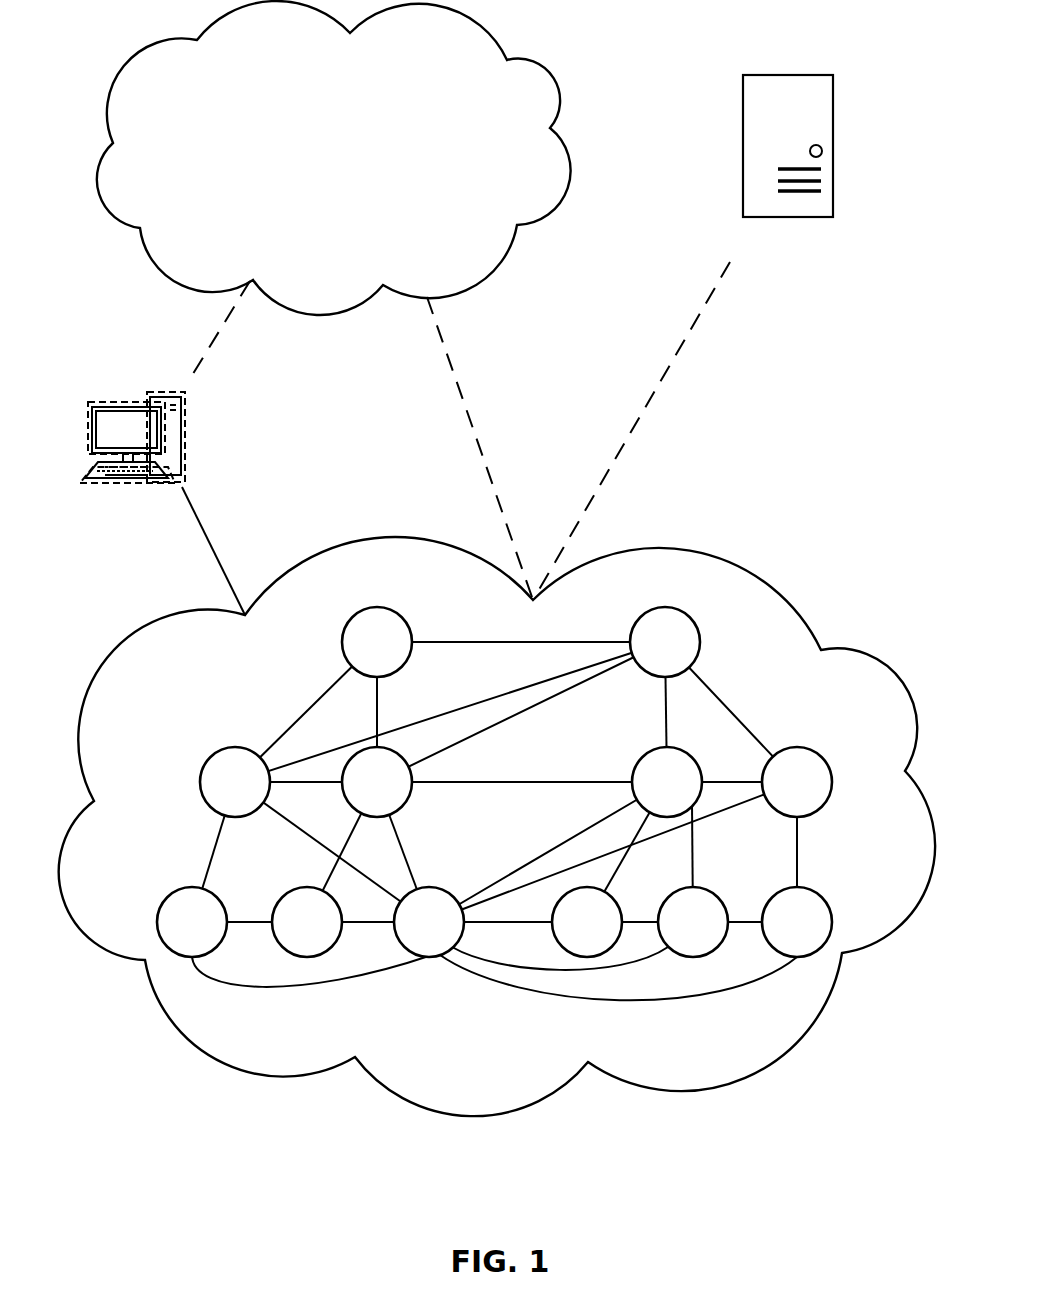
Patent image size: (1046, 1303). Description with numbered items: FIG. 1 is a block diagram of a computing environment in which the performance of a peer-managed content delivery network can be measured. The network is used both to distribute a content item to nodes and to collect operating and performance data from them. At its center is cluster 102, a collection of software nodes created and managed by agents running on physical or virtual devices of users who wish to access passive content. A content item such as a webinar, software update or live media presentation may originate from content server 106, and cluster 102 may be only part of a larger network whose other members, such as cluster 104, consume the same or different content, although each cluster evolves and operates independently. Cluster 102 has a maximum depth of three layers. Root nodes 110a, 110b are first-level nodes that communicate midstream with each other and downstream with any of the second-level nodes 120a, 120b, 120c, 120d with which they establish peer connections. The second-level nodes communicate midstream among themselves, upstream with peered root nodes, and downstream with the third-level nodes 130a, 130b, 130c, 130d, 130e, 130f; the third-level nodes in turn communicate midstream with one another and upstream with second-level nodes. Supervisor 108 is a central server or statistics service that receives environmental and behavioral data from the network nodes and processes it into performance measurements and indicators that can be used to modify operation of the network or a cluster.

The cluster 102 is at (497, 826).
The cluster 104 is at (334, 158).
The content server 106 is at (788, 171).
The supervisor 108 is at (132, 467).
The root node 110a is at (377, 642).
The root node 110b is at (665, 642).
The second-level node 120a is at (235, 782).
The second-level node 120b is at (377, 782).
The second-level node 120c is at (667, 782).
The second-level node 120d is at (797, 782).
The third-level node 130a is at (192, 922).
The third-level node 130b is at (307, 922).
The third-level node 130c is at (429, 922).
The third-level node 130d is at (587, 922).
The third-level node 130e is at (693, 922).
The third-level node 130f is at (797, 922).